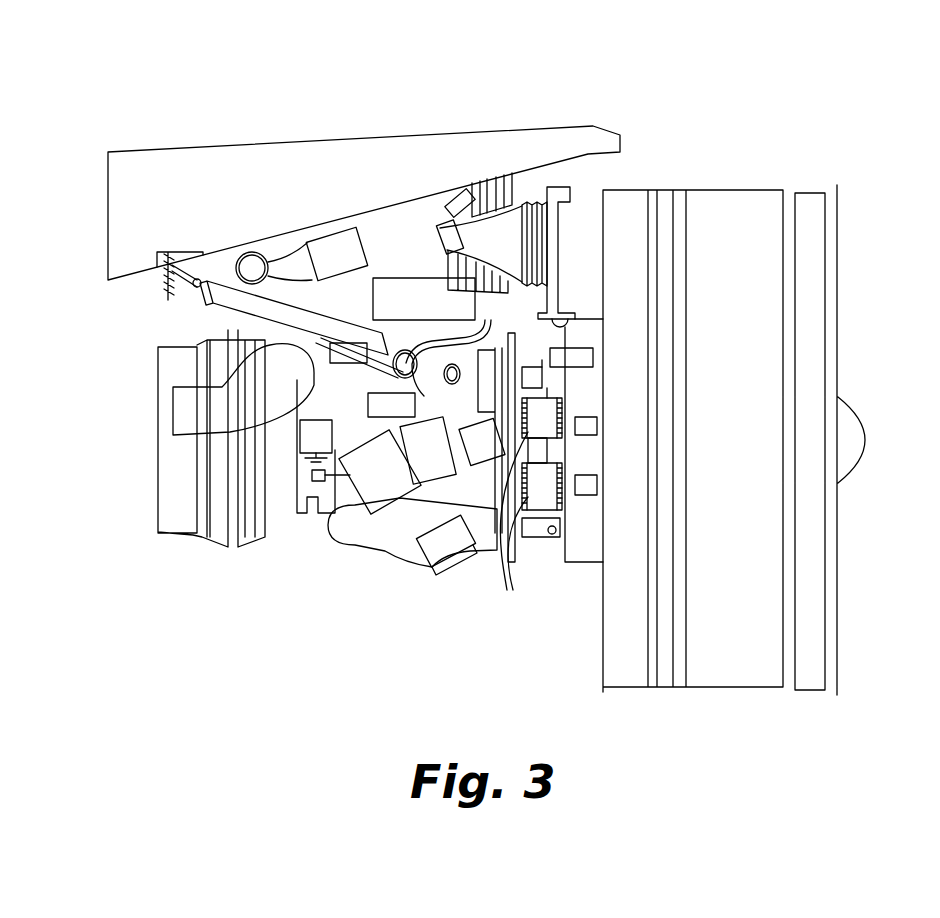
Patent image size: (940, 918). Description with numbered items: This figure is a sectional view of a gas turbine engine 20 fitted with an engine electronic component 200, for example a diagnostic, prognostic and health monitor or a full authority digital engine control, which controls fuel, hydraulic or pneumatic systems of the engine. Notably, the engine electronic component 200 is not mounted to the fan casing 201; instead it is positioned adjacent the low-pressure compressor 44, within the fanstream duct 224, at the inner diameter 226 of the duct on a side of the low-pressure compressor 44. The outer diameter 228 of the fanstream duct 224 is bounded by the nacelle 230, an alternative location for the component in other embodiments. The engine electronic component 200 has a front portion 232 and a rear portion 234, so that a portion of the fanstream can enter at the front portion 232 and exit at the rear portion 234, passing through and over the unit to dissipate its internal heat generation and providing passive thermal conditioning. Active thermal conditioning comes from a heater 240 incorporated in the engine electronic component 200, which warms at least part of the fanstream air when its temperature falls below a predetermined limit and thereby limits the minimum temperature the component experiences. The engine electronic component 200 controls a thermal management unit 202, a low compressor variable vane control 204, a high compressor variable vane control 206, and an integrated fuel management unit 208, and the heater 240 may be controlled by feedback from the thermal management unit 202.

The engine 20 is at (739, 362).
The low-pressure compressor 44 is at (546, 548).
The engine electronic component 200 is at (716, 483).
The fan casing 201 is at (772, 303).
The thermal management unit 202 is at (532, 379).
The low compressor variable vane control 204 is at (570, 356).
The high compressor variable vane control 206 is at (362, 399).
The integrated fuel management unit 208 is at (438, 545).
The fanstream duct 224 is at (585, 189).
The inner diameter 226 is at (540, 332).
The outer diameter 228 is at (528, 168).
The nacelle 230 is at (314, 152).
The front portion 232 is at (553, 468).
The rear portion 234 is at (521, 524).
The heater 240 is at (595, 490).